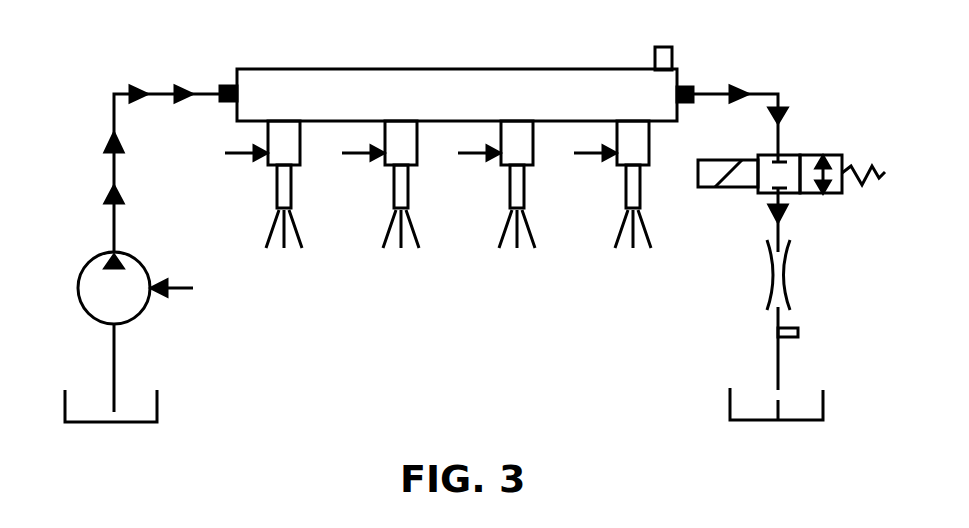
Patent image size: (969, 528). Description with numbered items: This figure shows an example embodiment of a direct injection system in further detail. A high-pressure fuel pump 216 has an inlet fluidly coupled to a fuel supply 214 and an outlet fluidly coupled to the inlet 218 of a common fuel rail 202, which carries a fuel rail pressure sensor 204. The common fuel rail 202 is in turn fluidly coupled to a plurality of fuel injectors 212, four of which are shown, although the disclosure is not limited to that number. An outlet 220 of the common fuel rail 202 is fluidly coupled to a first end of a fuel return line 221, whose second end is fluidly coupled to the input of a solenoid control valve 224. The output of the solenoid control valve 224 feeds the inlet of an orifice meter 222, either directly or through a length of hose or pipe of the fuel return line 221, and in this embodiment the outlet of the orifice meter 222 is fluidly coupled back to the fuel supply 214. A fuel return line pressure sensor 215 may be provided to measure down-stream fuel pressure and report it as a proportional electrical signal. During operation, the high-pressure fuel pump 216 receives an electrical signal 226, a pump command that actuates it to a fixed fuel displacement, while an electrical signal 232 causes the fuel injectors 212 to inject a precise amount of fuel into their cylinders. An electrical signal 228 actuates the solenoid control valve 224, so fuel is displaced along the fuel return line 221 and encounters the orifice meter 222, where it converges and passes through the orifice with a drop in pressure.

The common fuel rail 202 is at (442, 115).
The fuel rail pressure sensor 204 is at (662, 47).
The fuel injectors 212 is at (667, 258).
The fuel supply 214 is at (157, 392).
The fuel return line pressure sensor 215 is at (798, 330).
The high-pressure fuel pump 216 is at (135, 258).
The inlet 218 is at (222, 87).
The outlet 220 is at (680, 101).
The fuel return line 221 is at (757, 92).
The orifice meter 222 is at (790, 243).
The solenoid control valve 224 is at (810, 155).
The electrical signal 226 is at (182, 282).
The electrical signal 228 is at (866, 167).
The electrical signal 232 is at (402, 155).